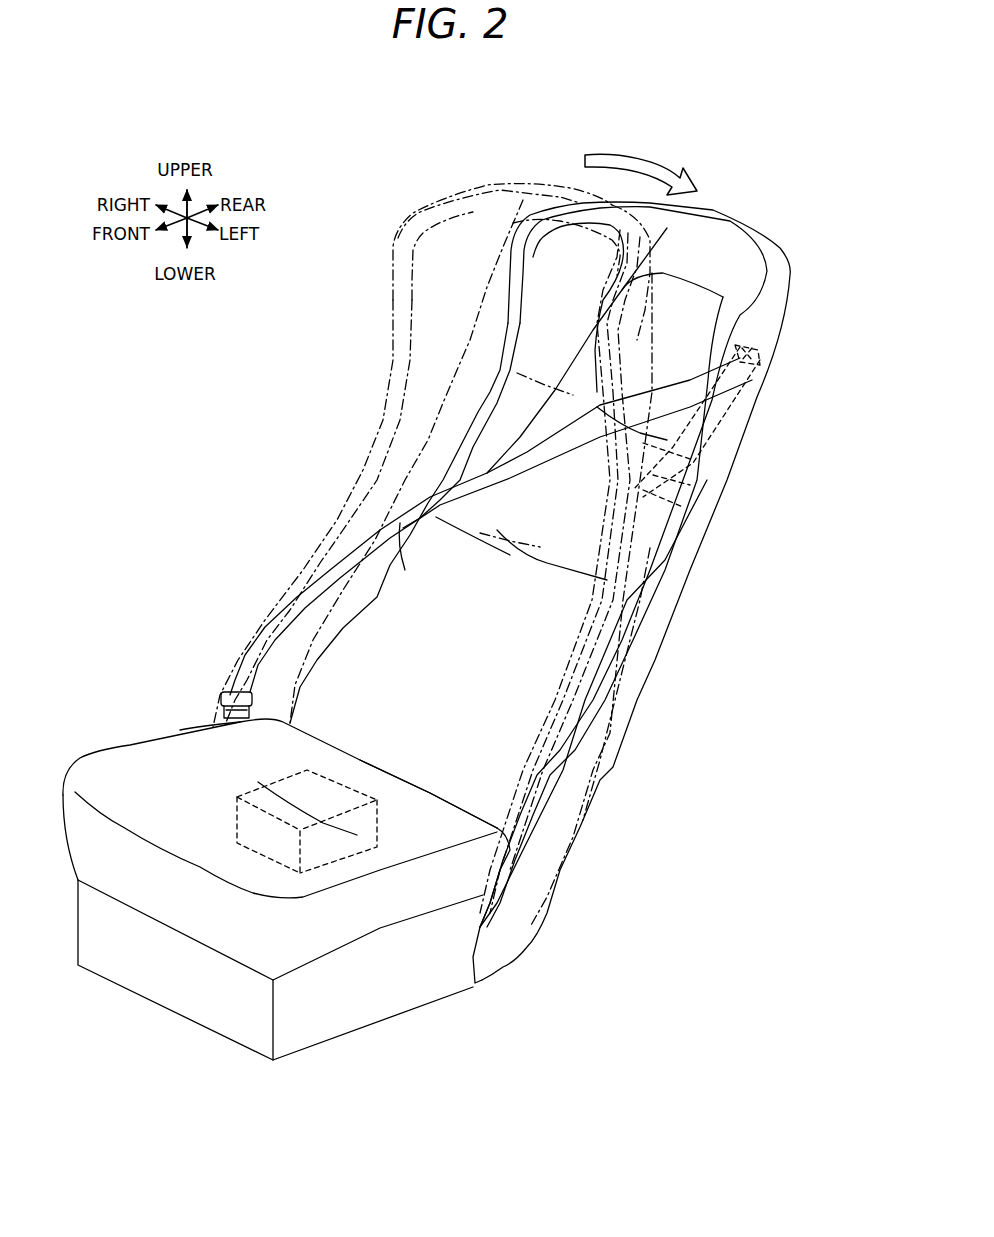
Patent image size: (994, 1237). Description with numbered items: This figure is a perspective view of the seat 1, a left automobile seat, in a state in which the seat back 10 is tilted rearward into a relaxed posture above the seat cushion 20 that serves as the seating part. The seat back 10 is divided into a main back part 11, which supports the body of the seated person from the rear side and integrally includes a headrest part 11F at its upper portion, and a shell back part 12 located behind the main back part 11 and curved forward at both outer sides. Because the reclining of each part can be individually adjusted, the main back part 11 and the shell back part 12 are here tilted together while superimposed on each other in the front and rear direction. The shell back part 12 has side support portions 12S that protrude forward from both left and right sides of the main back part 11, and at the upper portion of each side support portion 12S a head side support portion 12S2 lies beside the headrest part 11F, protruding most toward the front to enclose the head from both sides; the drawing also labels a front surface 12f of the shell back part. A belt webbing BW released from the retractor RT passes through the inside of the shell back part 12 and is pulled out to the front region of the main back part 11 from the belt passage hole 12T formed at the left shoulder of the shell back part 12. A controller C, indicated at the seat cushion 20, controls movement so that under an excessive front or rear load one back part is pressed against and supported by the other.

The seat 1 is at (196, 384).
The seat back 10 is at (272, 448).
The main back part 11 is at (473, 557).
The shell back part 12 is at (447, 465).
The headrest part 11F is at (699, 335).
The front surface of back portion 12f is at (447, 708).
The side support portions 12S is at (553, 310).
The head side support portion 12S2 is at (591, 283).
The belt passage hole 12T is at (760, 355).
The seat cushion 20 is at (128, 768).
The belt webbing BW is at (560, 445).
The retractor RT is at (663, 482).
The controller C is at (267, 833).